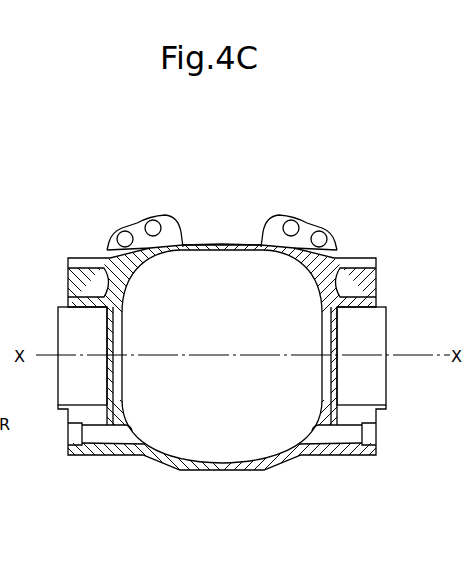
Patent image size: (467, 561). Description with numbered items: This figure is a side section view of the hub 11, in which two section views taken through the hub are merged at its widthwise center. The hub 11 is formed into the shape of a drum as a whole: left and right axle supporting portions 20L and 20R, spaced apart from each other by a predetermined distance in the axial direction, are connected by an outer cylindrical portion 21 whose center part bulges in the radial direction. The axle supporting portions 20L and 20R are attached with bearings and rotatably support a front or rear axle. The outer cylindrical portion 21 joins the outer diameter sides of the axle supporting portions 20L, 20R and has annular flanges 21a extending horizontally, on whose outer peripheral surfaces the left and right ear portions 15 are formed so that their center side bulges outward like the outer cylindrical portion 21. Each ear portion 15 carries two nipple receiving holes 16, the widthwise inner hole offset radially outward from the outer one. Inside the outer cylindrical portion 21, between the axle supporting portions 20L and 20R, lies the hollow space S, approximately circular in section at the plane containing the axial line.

The hub 11 is at (243, 237).
The ear portion 15 is at (107, 247).
The nipple receiving hole 16 is at (150, 220).
The left axle supporting portion 20L is at (58, 405).
The right axle supporting portion 20R is at (386, 405).
The outer cylindrical portion 21 is at (215, 243).
The annular flange 21a is at (68, 257).
The hollow space S is at (248, 337).